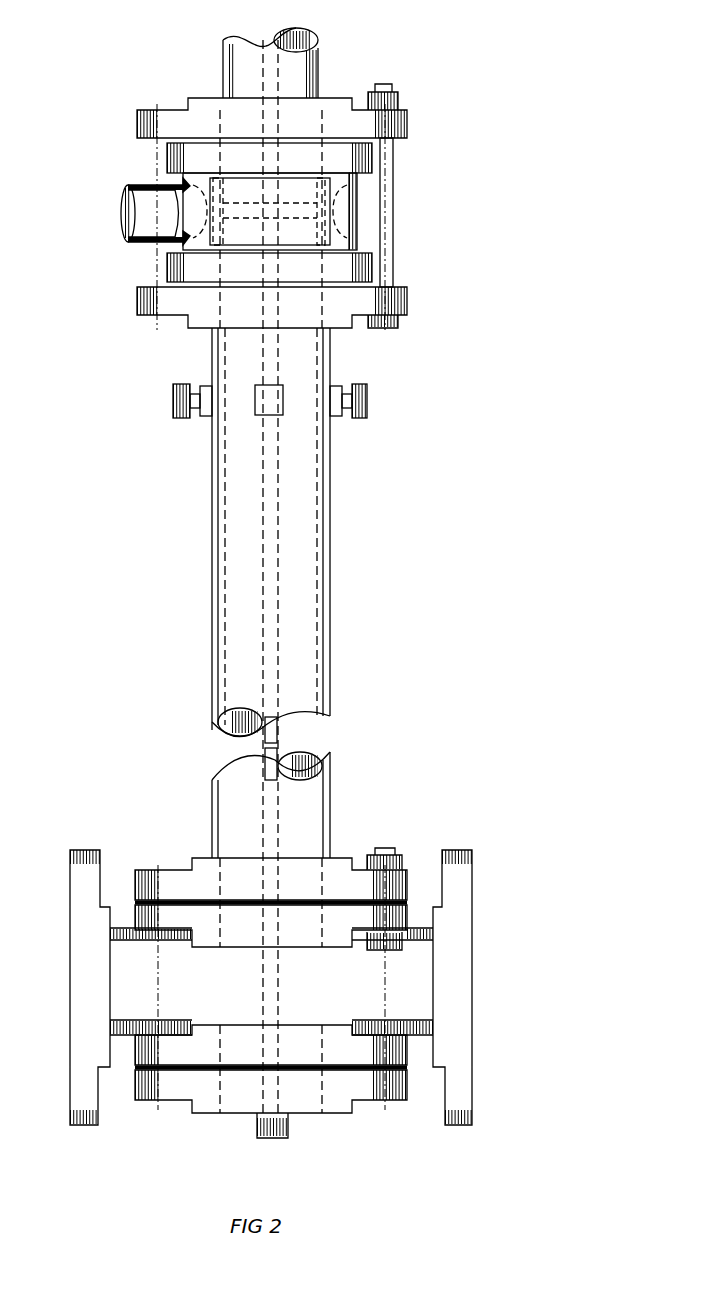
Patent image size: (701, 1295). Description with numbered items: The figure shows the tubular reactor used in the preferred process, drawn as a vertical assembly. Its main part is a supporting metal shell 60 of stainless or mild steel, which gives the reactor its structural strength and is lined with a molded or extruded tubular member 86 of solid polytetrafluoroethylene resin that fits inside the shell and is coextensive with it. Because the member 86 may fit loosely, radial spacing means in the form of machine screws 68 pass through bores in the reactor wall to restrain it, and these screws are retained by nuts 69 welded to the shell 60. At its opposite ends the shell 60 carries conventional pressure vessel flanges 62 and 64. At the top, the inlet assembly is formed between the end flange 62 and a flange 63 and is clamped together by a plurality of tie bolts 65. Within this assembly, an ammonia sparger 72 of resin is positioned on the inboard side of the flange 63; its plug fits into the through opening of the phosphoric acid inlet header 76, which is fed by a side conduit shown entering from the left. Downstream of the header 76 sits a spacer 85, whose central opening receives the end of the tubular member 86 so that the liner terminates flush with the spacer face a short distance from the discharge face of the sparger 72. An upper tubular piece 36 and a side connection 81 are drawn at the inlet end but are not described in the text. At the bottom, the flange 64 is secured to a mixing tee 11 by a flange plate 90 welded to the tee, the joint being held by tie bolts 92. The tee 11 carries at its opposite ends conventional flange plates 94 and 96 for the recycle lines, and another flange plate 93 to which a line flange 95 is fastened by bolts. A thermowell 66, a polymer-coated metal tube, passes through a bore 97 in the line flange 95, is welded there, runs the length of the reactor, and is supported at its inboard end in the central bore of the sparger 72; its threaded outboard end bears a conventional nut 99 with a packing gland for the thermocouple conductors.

The mixing tee 11 is at (412, 926).
The upper tubular member 36 is at (318, 50).
The supporting metal shell 60 is at (212, 544).
The end flange 62 is at (137, 300).
The flange 63 is at (137, 116).
The flange 64 is at (184, 873).
The tie bolts 65 is at (393, 170).
The thermowell 66 is at (280, 750).
The machine screws 68 is at (366, 400).
The nuts 69 is at (203, 418).
The ammonia sparger 72 is at (167, 162).
The phosphoric acid inlet header 76 is at (358, 221).
The side conduit 81 is at (121, 215).
The spacer 85 is at (167, 268).
The tubular member 86 is at (218, 722).
The flange plate 90 is at (212, 932).
The tie bolts 92 is at (390, 848).
The flange plate 93 is at (335, 1036).
The flange plate 94 is at (466, 953).
The line flange 95 is at (312, 1108).
The flange plate 96 is at (70, 950).
The bore 97 is at (263, 1088).
The nut 99 is at (258, 1135).